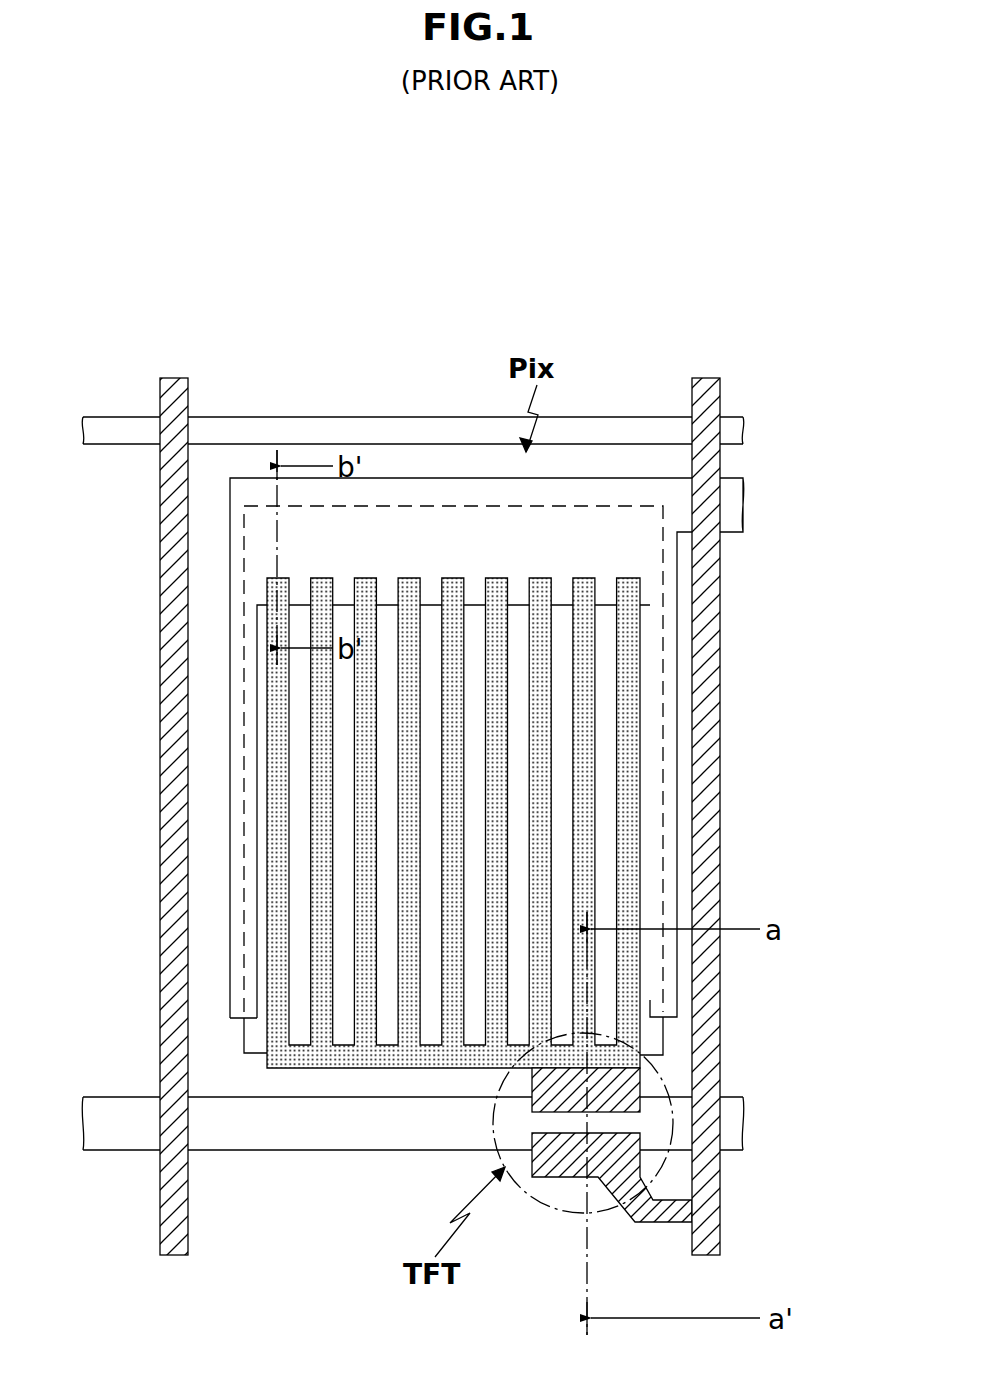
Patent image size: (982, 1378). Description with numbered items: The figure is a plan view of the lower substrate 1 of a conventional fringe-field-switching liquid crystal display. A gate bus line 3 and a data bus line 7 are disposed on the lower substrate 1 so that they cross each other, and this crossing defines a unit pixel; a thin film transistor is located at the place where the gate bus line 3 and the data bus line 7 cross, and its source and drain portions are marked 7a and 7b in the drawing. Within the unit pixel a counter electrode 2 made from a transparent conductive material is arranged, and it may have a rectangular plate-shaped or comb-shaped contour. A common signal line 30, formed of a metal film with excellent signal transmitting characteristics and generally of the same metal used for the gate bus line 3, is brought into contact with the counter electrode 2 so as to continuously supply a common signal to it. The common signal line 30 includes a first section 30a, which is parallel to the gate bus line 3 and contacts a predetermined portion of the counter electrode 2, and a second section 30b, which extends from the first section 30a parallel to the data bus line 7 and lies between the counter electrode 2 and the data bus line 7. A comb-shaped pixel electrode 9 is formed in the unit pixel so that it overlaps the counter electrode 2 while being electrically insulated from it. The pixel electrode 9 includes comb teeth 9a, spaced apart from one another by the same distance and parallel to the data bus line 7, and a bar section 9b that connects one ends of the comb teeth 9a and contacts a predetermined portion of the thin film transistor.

The lower substrate 1 is at (378, 1206).
The counter electrode 2 is at (653, 1040).
The gate bus line 3 is at (740, 431).
The data bus line 7 is at (178, 888).
The source electrode 7a is at (562, 1160).
The drain electrode 7b is at (615, 1088).
The pixel electrode 9 is at (476, 779).
The comb teeth 9a is at (265, 972).
The bar section 9b is at (268, 1063).
The common signal line 30 is at (777, 747).
The first section 30a is at (727, 507).
The second section 30b is at (667, 587).